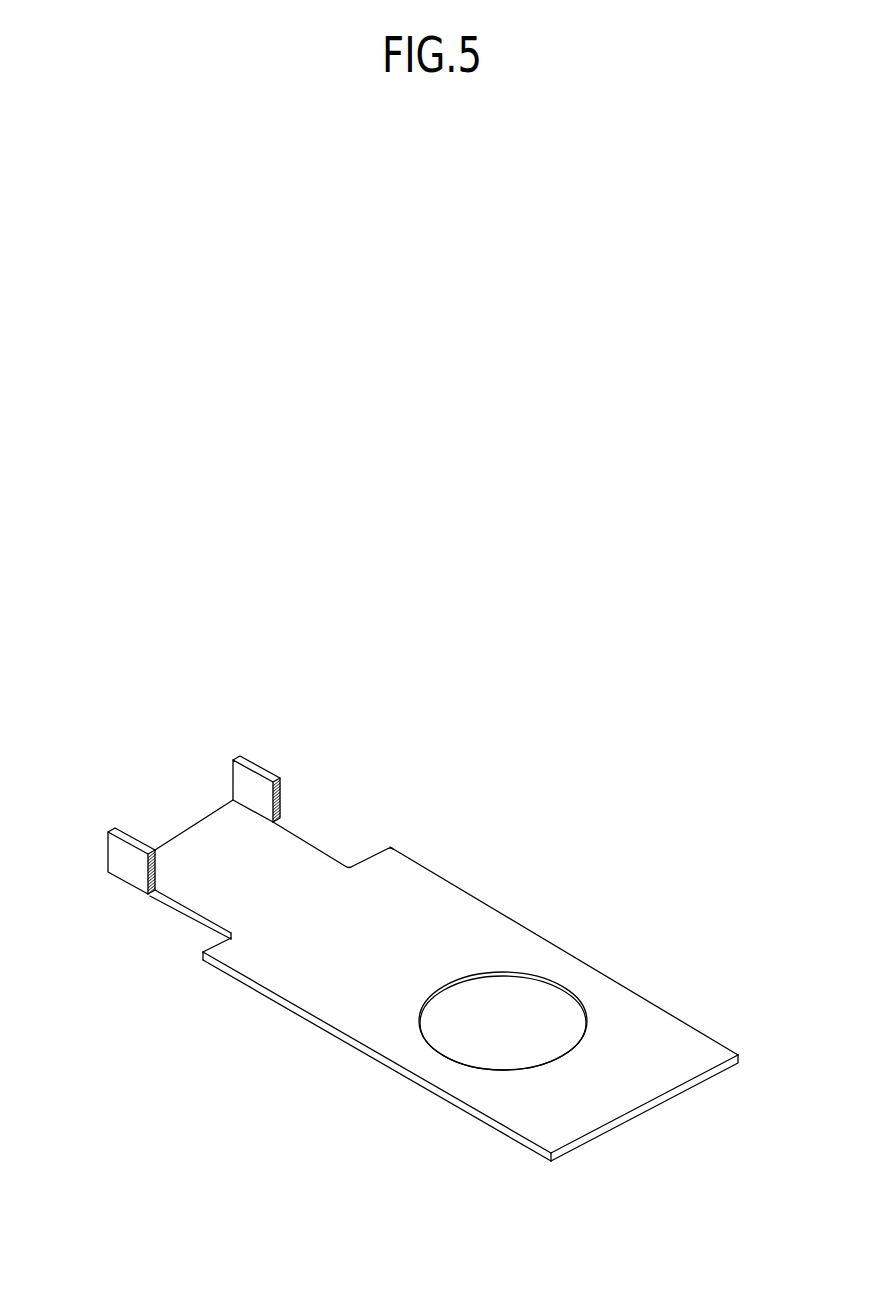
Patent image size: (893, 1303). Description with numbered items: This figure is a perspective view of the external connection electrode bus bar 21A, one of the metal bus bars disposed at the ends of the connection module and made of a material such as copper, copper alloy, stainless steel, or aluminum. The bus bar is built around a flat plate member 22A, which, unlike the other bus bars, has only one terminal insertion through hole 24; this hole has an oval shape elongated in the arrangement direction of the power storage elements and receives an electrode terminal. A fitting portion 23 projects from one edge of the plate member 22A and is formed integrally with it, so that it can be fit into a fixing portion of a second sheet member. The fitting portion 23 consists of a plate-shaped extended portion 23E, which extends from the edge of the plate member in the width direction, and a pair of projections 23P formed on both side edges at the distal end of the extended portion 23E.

The external connection electrode bus bar 21A is at (505, 895).
The plate member 22A is at (352, 995).
The fitting portion 23 is at (310, 833).
The extended portion 23E is at (227, 895).
The projections 23P is at (122, 830).
The terminal insertion through hole 24 is at (505, 992).